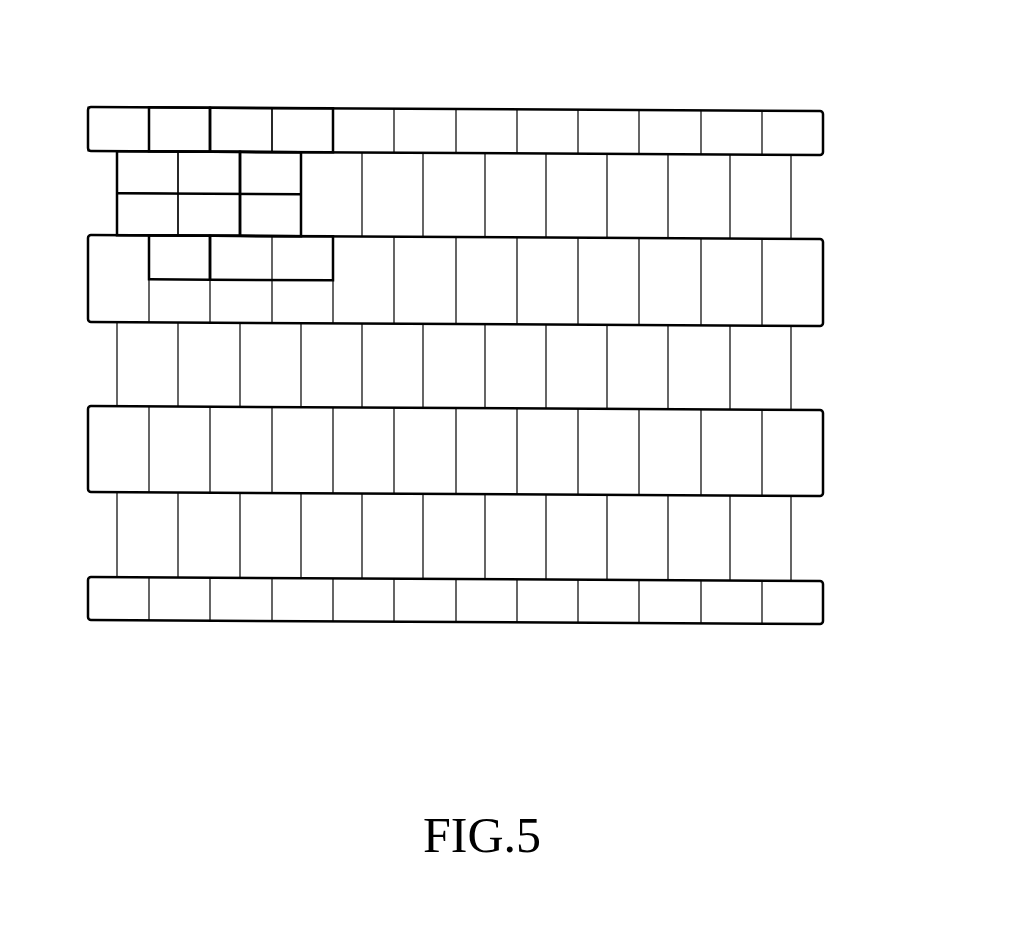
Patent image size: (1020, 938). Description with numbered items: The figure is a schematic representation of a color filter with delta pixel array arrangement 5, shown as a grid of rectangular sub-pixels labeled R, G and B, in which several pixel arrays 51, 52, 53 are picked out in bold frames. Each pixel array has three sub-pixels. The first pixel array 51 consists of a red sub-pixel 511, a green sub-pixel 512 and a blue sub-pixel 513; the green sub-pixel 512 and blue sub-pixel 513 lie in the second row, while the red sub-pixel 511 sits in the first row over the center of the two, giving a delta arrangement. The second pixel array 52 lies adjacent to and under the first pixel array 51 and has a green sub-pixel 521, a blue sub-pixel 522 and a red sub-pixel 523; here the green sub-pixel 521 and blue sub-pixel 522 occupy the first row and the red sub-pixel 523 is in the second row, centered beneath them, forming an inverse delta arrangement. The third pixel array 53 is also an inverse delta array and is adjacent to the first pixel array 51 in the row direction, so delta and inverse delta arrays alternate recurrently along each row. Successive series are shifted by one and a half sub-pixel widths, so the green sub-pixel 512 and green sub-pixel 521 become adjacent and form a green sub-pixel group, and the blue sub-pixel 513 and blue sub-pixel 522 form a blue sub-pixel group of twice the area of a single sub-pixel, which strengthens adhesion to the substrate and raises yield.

The color filter with delta pixel array arrangement 5 is at (455, 314).
The first pixel array 51 is at (133, 83).
The red sub-pixel 511 is at (192, 107).
The green sub-pixel 512 is at (130, 162).
The blue sub-pixel 513 is at (225, 107).
The second pixel array 52 is at (106, 197).
The green sub-pixel 521 is at (130, 210).
The blue sub-pixel 522 is at (180, 235).
The red sub-pixel 523 is at (157, 265).
The third pixel array 53 is at (316, 85).